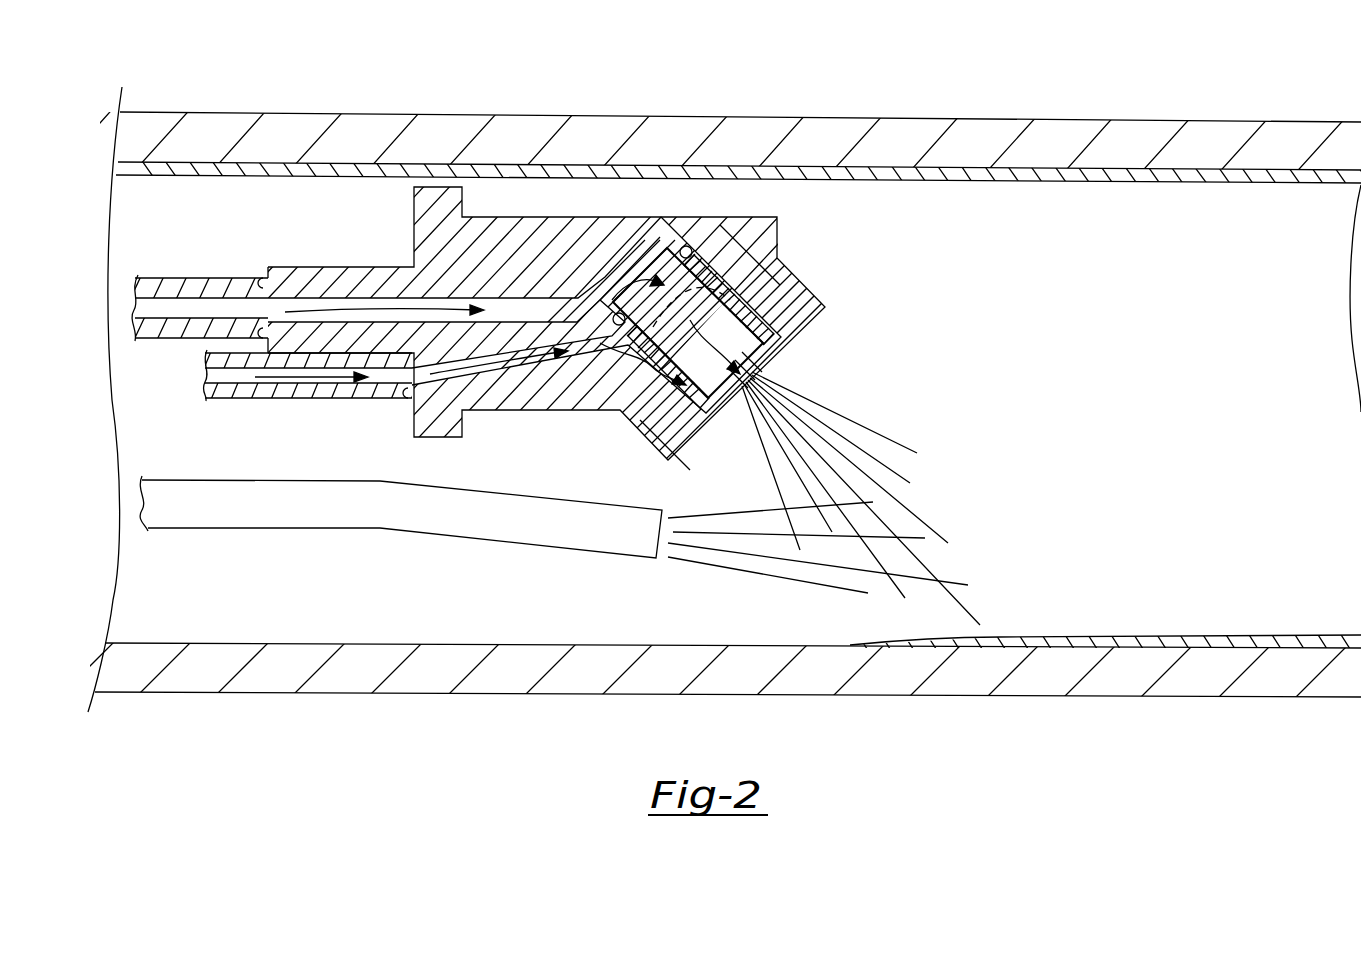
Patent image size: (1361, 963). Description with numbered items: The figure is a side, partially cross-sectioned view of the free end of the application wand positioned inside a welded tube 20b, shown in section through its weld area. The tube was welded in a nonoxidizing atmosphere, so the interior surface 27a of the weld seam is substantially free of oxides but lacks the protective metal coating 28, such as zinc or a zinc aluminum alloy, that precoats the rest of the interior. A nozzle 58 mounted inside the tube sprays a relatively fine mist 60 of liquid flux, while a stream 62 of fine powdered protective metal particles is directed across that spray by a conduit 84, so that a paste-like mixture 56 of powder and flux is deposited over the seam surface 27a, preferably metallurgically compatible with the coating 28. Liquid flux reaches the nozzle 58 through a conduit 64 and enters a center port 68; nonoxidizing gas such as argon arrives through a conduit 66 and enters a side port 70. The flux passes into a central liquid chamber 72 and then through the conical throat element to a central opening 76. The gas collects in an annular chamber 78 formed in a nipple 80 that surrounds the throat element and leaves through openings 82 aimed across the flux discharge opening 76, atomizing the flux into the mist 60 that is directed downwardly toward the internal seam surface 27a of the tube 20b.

The welded tube 20b is at (210, 130).
The interior surface of the weld area 27a is at (222, 643).
The protective metal coating 28 is at (1020, 173).
The paste-like mixture 56 is at (1048, 640).
The nozzle 58 is at (548, 203).
The mist 60 is at (840, 386).
The stream of powdered protective metal coating 62 is at (743, 575).
The conduit 64 is at (182, 292).
The conduit 66 is at (260, 398).
The center port 68 is at (395, 300).
The side port 70 is at (478, 362).
The central liquid chamber 72 is at (640, 257).
The central opening 76 is at (745, 380).
The annular chamber 78 is at (783, 273).
The nipple 80 is at (628, 422).
The openings 82 is at (795, 313).
The conduit 84 is at (373, 508).